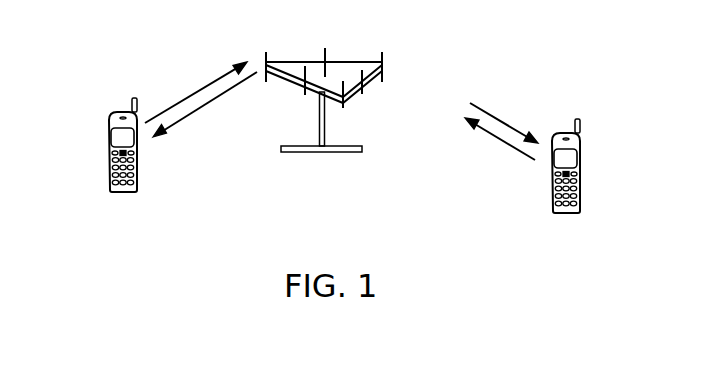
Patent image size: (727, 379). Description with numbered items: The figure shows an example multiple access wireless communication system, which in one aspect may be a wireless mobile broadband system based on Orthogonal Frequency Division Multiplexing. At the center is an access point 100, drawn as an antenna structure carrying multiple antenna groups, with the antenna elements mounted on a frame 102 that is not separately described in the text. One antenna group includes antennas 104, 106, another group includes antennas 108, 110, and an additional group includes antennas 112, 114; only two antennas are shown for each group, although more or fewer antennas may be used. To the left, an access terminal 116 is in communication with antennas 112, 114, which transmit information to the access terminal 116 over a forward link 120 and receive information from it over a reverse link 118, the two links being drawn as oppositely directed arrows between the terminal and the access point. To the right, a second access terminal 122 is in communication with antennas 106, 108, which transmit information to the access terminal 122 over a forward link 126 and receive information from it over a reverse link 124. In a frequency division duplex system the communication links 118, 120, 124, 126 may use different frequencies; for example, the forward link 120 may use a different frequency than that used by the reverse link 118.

The access point 100 is at (310, 152).
The antenna array frame 102 is at (324, 82).
The antenna 104 is at (345, 103).
The antenna 106 is at (364, 90).
The antenna 108 is at (384, 72).
The antenna 110 is at (326, 50).
The antenna 112 is at (266, 55).
The antenna 114 is at (304, 92).
The access terminal 116 is at (106, 132).
The reverse link 118 is at (203, 87).
The forward link 120 is at (194, 113).
The access terminal 122 is at (582, 155).
The reverse link 124 is at (507, 144).
The forward link 126 is at (503, 121).